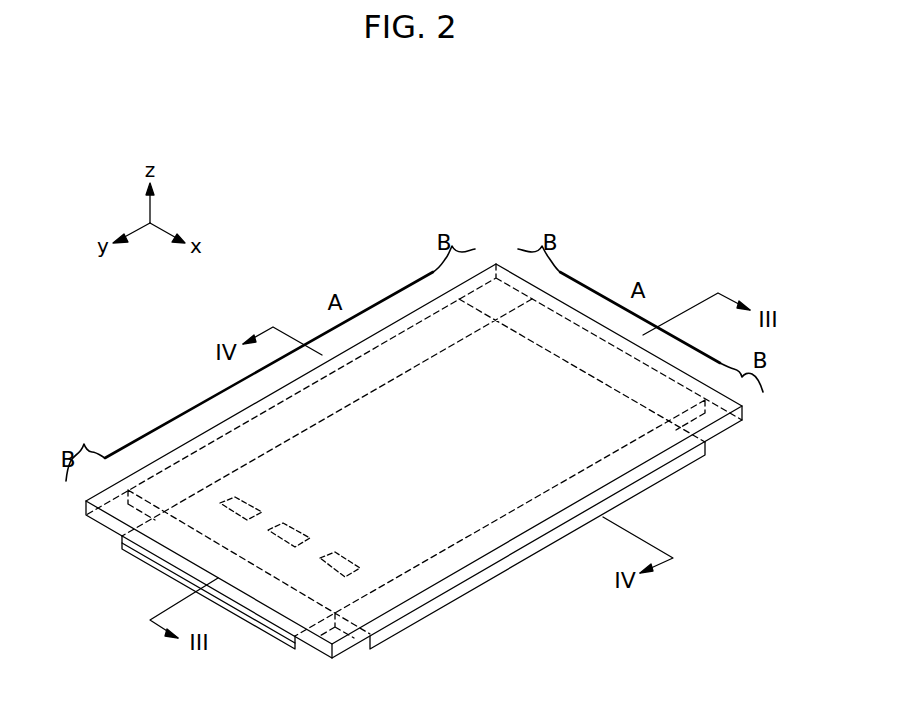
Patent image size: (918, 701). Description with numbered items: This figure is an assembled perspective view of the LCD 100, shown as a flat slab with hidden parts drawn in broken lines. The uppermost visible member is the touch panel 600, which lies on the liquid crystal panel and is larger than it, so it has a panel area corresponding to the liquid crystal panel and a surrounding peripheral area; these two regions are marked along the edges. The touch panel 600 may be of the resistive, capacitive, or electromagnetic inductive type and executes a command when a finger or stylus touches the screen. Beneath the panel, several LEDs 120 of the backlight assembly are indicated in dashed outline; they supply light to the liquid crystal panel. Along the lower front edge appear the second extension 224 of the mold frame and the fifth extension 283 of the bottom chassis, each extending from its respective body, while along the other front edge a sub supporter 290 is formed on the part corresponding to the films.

The LCD 100 is at (387, 226).
The LED 120 is at (232, 496).
The second extension 224 is at (138, 553).
The fifth extension 283 is at (160, 573).
The sub supporter 290 is at (445, 593).
The touch panel 600 is at (573, 318).